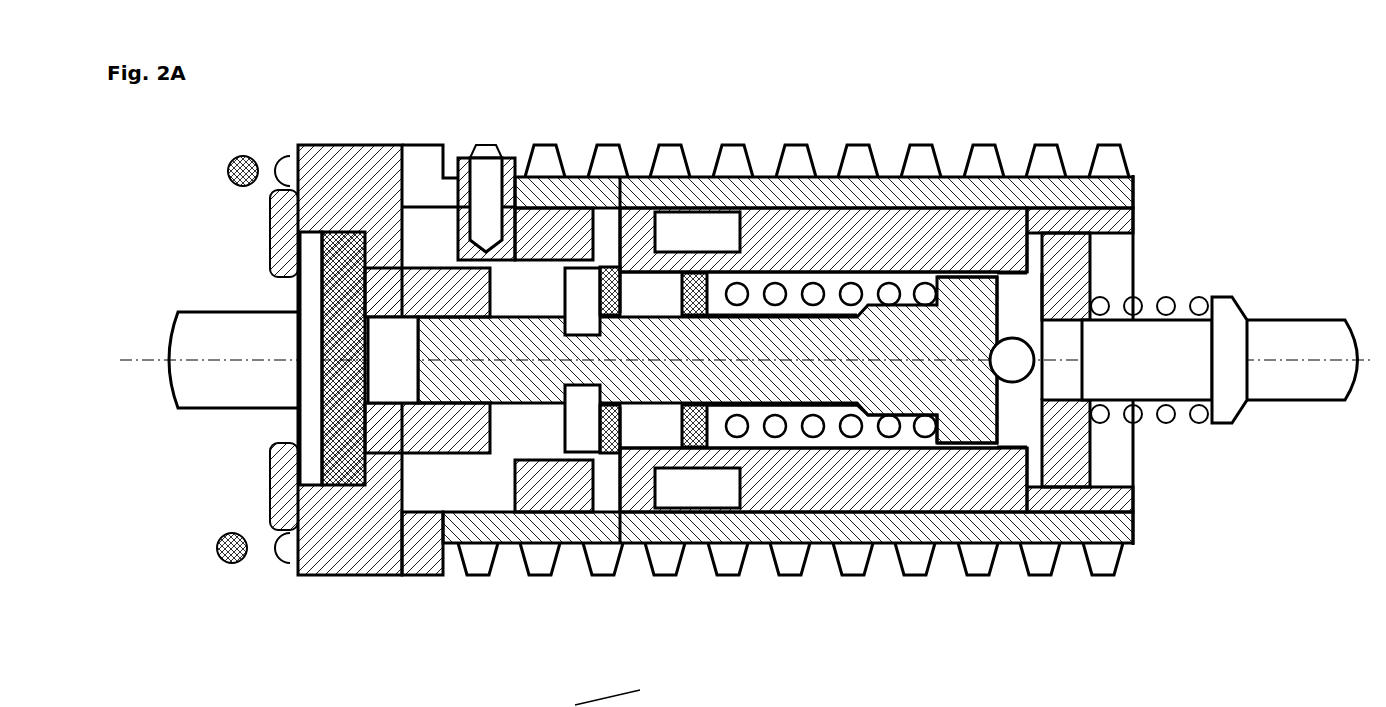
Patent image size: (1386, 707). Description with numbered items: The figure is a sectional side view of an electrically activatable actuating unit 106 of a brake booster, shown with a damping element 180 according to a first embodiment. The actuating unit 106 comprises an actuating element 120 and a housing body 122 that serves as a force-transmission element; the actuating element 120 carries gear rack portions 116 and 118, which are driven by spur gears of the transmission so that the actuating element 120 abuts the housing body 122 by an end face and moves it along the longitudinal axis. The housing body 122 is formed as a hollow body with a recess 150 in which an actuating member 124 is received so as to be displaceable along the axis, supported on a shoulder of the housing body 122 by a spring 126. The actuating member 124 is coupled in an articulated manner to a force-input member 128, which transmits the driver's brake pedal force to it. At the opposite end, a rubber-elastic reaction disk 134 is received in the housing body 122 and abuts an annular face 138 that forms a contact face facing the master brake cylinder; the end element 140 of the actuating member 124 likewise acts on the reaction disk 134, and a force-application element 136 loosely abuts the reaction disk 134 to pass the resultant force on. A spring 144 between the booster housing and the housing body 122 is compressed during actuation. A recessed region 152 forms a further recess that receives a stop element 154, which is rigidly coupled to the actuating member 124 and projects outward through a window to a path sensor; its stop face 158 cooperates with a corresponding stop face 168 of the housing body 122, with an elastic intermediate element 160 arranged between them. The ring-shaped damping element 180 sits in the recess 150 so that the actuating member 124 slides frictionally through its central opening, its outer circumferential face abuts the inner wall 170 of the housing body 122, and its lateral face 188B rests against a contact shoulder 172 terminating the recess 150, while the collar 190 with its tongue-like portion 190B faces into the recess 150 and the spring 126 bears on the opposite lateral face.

The actuating unit 106 is at (1137, 118).
The gear rack portion 116 is at (970, 555).
The gear rack portion 118 is at (988, 150).
The actuating element 120 is at (1018, 195).
The housing body 122 is at (338, 165).
The actuating member 124 is at (495, 355).
The spring 126 is at (912, 455).
The force-input member 128 is at (1303, 350).
The reaction disk 134 is at (335, 355).
The force-application element 136 is at (205, 345).
The annular face 138 is at (365, 440).
The end element 140 is at (370, 403).
The spring 144 is at (243, 155).
The recess 150 is at (823, 440).
The recessed region 152 is at (500, 545).
The stop element 154 is at (528, 232).
The stop face 158 is at (602, 262).
The elastic intermediate element 160 is at (612, 272).
The stop face 168 is at (612, 460).
The inner wall 170 is at (895, 265).
The contact shoulder 172 is at (672, 285).
The damping element 180 is at (686, 278).
The lateral face 188B is at (672, 490).
The collar 190 is at (714, 300).
The tongue-like portion 190B is at (610, 700).